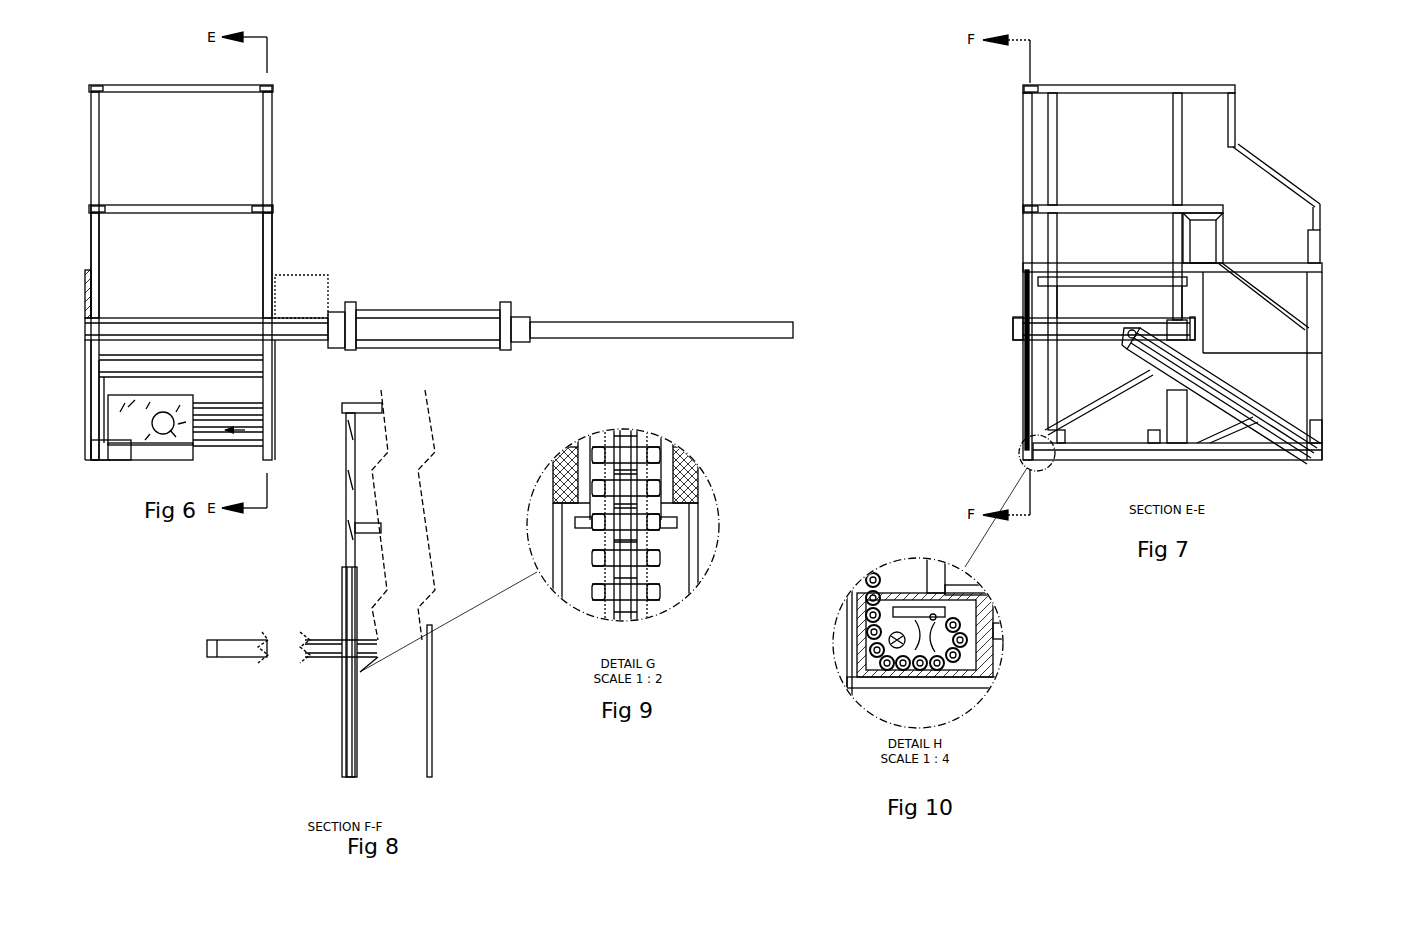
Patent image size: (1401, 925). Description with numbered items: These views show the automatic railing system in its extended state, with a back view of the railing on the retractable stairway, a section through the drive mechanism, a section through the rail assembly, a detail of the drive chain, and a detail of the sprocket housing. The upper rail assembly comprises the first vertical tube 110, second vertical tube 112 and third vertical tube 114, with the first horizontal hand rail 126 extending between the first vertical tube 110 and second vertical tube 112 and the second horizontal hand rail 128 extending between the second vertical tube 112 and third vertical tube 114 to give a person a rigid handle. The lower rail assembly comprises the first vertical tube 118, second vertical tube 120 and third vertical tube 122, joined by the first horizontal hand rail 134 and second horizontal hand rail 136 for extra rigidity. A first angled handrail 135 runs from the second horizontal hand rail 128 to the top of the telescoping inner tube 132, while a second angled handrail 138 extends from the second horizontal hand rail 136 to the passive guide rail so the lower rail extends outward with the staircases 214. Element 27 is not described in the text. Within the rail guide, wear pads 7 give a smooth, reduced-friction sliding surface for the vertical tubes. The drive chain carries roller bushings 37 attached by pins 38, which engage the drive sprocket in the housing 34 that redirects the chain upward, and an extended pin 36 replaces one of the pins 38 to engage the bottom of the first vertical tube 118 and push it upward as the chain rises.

In FIG. 6, the first horizontal hand rail 126 is at (170, 84).
In FIG. 6, the second vertical tube 112 is at (90, 138).
In FIG. 7, the second vertical tube 112 is at (1055, 141).
In FIG. 6, the first vertical tube 110 is at (274, 145).
In FIG. 7, the first vertical tube 110 is at (1172, 112).
In FIG. 6, the first horizontal hand rail 134 is at (150, 206).
In FIG. 6, the second vertical tube 120 is at (90, 238).
In FIG. 7, the second vertical tube 120 is at (1060, 243).
In FIG. 6, the first vertical tube 118 is at (274, 240).
In FIG. 9, the first vertical tube 118 is at (575, 460).
In FIG. 6, the rack strip 27 is at (101, 276).
In FIG. 7, the second horizontal hand rail 128 is at (1126, 84).
In FIG. 7, the third vertical tube 114 is at (1184, 177).
In FIG. 7, the second horizontal hand rail 136 is at (1100, 203).
In FIG. 7, the third vertical tube 122 is at (1172, 243).
In FIG. 7, the first angled handrail 135 is at (1263, 176).
In FIG. 7, the telescoping inner tube 132 is at (1323, 245).
In FIG. 7, the second angled handrail 138 is at (1288, 300).
In FIG. 7, the staircase 214 is at (1285, 397).
In FIG. 9, the wear pad 7 is at (565, 490).
In FIG. 9, the extended pin 36 is at (680, 522).
In FIG. 9, the pin 38 is at (663, 558).
In FIG. 9, the roller bushing 37 is at (655, 592).
In FIG. 10, the housing 34 is at (848, 687).